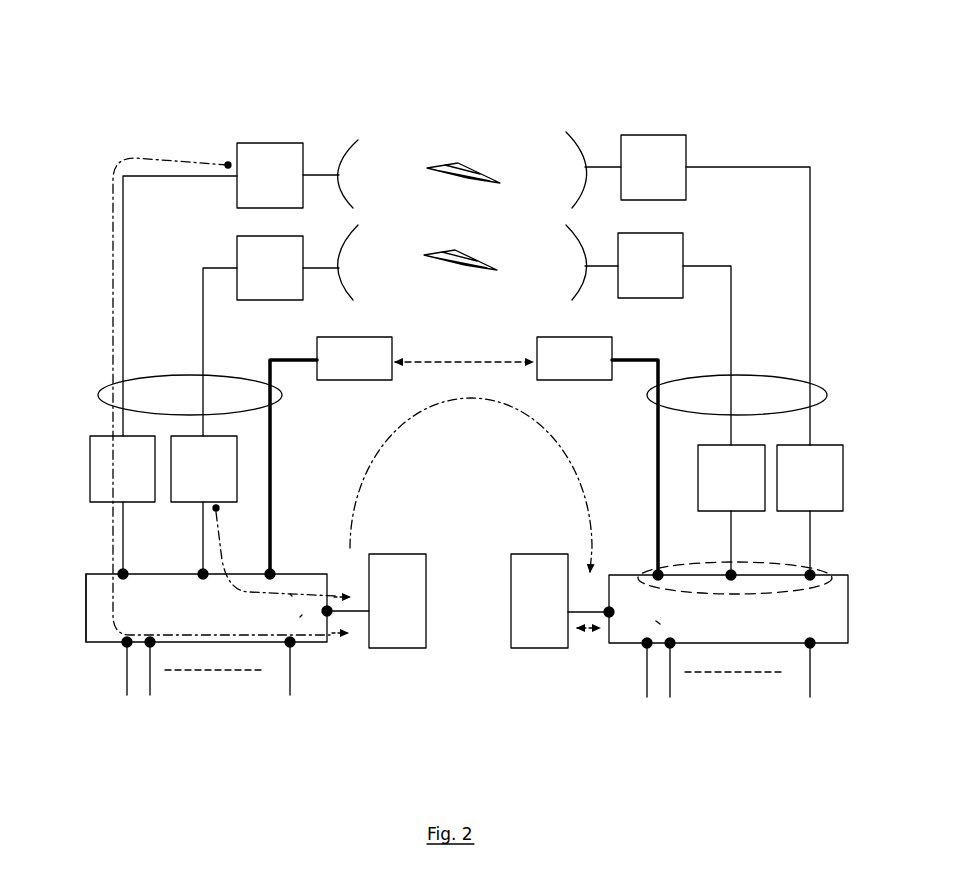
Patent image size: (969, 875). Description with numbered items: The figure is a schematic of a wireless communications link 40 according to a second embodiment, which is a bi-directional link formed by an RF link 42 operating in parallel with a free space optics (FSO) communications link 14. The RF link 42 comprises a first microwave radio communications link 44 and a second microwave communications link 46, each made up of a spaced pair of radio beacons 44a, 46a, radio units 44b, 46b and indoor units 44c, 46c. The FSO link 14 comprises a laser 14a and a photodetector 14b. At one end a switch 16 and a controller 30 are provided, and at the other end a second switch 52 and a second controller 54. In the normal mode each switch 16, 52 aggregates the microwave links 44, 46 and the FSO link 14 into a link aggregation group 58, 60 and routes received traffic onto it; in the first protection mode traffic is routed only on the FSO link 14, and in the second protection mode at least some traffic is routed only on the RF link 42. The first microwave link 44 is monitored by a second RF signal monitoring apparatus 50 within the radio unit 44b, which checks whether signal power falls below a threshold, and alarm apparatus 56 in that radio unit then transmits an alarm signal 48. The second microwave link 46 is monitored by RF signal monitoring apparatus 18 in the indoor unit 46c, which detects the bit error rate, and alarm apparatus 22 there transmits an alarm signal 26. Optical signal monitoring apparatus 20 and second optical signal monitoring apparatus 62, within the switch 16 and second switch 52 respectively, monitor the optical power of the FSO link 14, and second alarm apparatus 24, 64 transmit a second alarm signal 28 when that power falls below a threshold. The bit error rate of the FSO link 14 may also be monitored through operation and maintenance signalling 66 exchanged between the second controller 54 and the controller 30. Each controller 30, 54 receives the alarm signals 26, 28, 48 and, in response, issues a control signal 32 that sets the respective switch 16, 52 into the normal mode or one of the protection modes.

The RF link 42 is at (550, 76).
The first microwave radio communications link 44 is at (331, 118).
The radio beacons 44a is at (351, 138).
The radio unit 44b is at (272, 150).
The indoor unit 44c is at (92, 465).
The second microwave communications link 46 is at (702, 243).
The radio beacons 46a is at (343, 240).
The radio unit 46b is at (256, 300).
The indoor unit 46c is at (190, 496).
The second RF signal monitoring apparatus 50 is at (253, 160).
The alarm apparatus 56 is at (246, 184).
The link aggregation group 58 is at (100, 395).
The link aggregation group 60 is at (818, 392).
The second optical signal monitoring apparatus 62 is at (636, 598).
The second alarm apparatus 64 is at (660, 624).
The operation and maintenance signalling 66 is at (472, 400).
The free space optics communications link 14 is at (588, 398).
The laser 14a is at (352, 372).
The photodetector 14b is at (557, 355).
The switch 16 is at (100, 648).
The RF signal monitoring apparatus 18 is at (181, 491).
The optical signal monitoring apparatus 20 is at (289, 597).
The alarm apparatus 22 is at (222, 495).
The second alarm apparatus 24 is at (300, 617).
The alarm signal 26 is at (293, 590).
The second alarm signal 28 is at (341, 622).
The controller 30 is at (410, 565).
The control signal 32 is at (353, 606).
The wireless communications link 40 is at (306, 754).
The alarm signal 48 is at (105, 524).
The second switch 52 is at (838, 643).
The second controller 54 is at (540, 572).